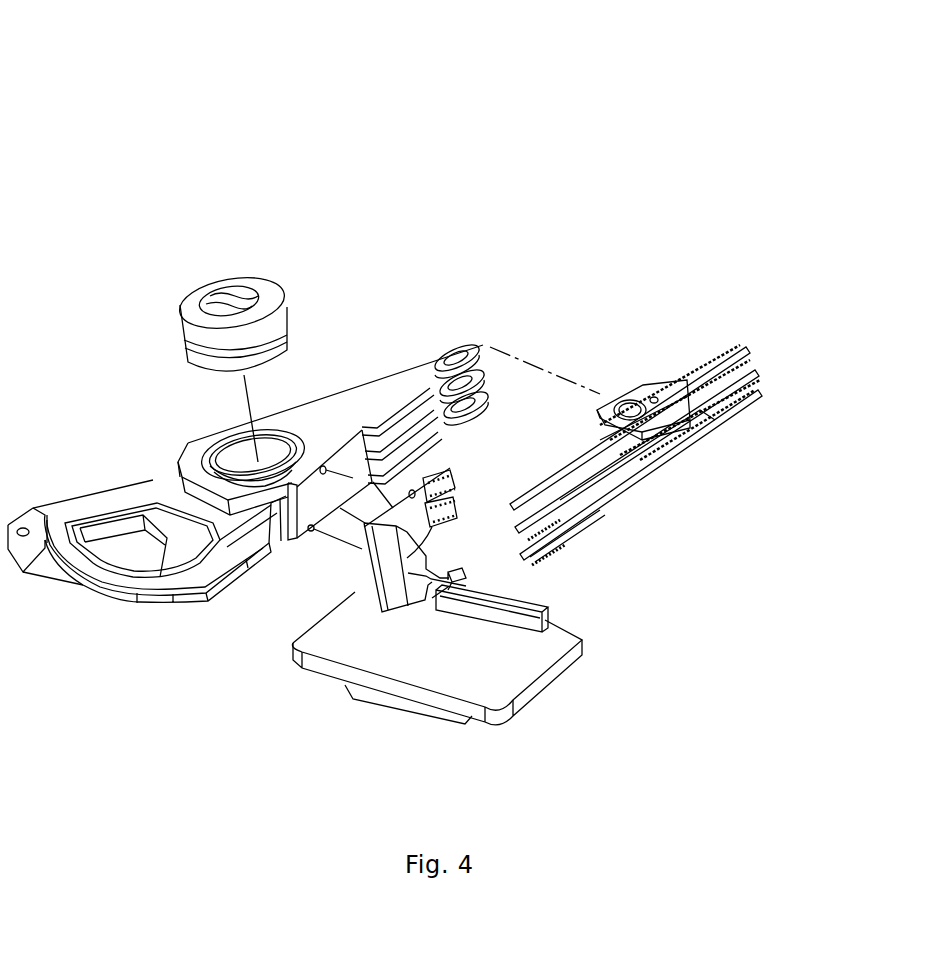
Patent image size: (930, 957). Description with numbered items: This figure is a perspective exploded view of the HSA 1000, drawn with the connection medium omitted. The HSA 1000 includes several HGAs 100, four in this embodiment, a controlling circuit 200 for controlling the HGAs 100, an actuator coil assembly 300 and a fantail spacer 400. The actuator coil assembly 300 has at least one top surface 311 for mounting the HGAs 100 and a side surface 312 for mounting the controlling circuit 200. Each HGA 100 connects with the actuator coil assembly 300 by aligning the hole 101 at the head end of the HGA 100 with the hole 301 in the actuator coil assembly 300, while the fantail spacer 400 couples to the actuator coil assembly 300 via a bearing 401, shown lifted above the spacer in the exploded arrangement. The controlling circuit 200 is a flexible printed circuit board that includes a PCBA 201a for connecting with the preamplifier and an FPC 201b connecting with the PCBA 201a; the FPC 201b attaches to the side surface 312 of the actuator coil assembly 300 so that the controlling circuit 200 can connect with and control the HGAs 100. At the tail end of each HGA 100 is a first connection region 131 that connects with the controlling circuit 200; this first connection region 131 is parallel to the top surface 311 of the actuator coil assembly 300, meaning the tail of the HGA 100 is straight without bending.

The HSA 1000 is at (124, 57).
The fantail spacer 400 is at (104, 507).
The bearing 401 is at (268, 298).
The actuator coil assembly 300 is at (357, 400).
The side surface 312 is at (313, 489).
The top surface 311 is at (410, 372).
The hole 301 is at (447, 343).
The HGA 100 is at (673, 368).
The hole 101 is at (622, 397).
The first connection region 131 is at (560, 538).
The controlling circuit 200 is at (340, 700).
The PCBA 201a is at (563, 643).
The FPC 201b is at (362, 553).